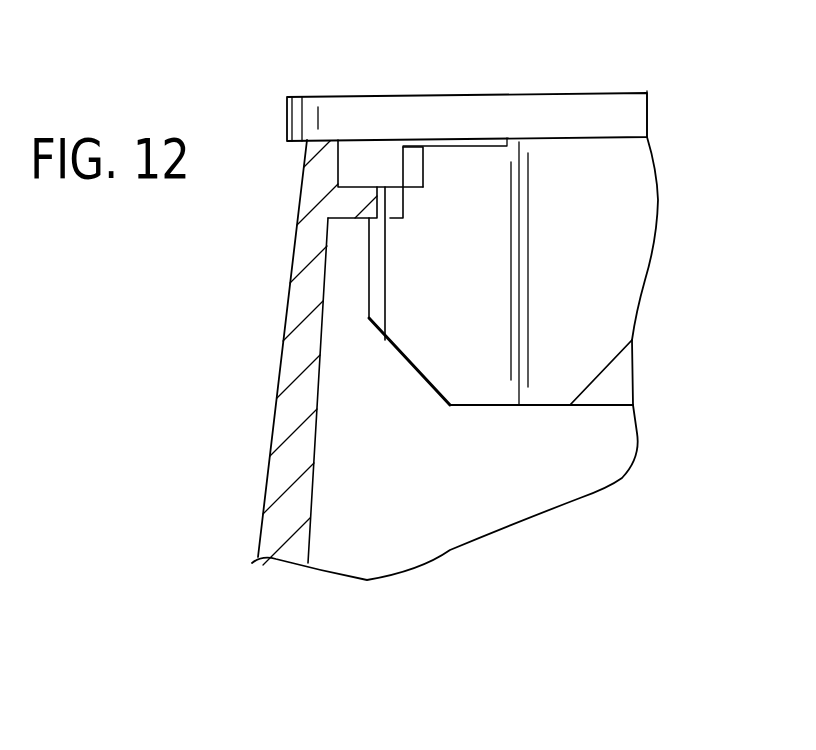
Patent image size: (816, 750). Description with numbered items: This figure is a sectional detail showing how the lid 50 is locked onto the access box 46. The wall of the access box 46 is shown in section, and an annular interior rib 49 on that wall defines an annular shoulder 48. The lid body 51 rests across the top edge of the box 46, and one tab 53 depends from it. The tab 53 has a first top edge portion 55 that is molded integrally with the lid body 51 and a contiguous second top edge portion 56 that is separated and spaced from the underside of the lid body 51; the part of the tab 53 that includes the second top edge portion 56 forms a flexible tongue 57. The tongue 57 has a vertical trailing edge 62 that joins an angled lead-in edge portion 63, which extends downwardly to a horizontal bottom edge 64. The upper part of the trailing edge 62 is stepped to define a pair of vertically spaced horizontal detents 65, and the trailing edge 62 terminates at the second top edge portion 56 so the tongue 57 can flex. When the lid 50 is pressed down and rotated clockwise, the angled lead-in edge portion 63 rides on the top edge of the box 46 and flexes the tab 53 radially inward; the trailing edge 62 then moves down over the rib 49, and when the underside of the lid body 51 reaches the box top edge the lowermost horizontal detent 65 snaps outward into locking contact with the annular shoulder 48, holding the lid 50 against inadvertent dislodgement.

The access box 46 is at (258, 321).
The annular shoulder 48 is at (345, 221).
The annular interior rib 49 is at (328, 170).
The lid 50 is at (572, 68).
The lid body 51 is at (413, 113).
The tab 53 is at (622, 198).
The first top edge portion 55 is at (607, 138).
The second top edge portion 56 is at (474, 146).
The flexible tongue 57 is at (483, 370).
The vertical trailing edge 62 is at (382, 292).
The angled lead-in edge portion 63 is at (422, 378).
The horizontal bottom edge 64 is at (537, 405).
The horizontal detents 65 is at (395, 186).